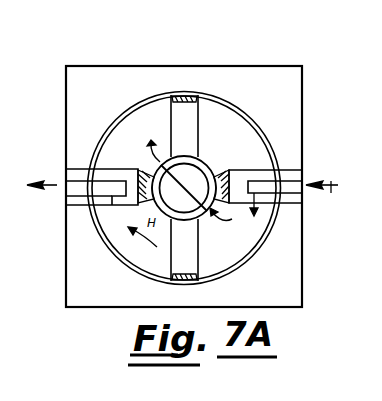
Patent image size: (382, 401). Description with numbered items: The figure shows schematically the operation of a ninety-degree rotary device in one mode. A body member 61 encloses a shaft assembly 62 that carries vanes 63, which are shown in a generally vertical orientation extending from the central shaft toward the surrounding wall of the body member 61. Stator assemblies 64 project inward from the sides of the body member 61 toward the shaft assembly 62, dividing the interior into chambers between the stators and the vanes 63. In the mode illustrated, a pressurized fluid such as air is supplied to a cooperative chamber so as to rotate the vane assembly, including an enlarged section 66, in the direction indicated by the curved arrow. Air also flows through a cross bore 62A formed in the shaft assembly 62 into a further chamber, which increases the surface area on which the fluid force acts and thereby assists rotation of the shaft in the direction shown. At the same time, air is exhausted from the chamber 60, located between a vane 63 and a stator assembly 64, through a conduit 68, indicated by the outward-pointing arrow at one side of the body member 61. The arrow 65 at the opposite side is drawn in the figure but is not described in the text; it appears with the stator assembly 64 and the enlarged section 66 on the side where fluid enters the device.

The chamber 60 is at (110, 225).
The body member 61 is at (268, 141).
The shaft assembly 62 is at (184, 188).
The cross bore 62A is at (201, 171).
The vane 63 is at (185, 123).
The stator assembly 64 is at (107, 188).
The force arrow 65 is at (329, 195).
The enlarged section 66 is at (228, 170).
The conduit 68 is at (55, 189).